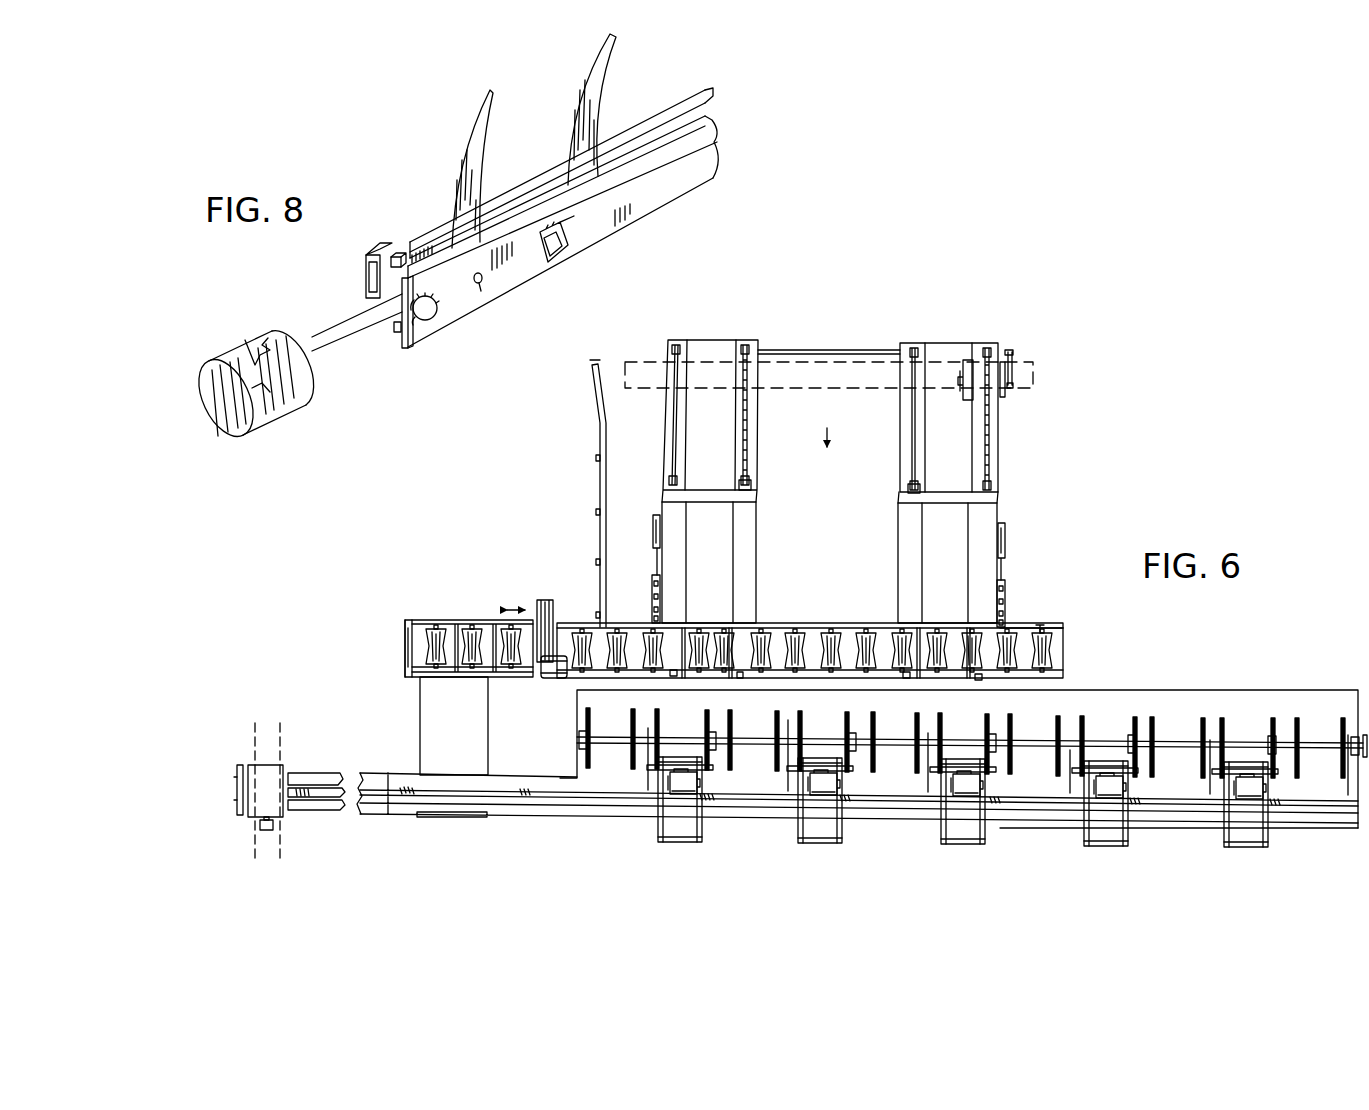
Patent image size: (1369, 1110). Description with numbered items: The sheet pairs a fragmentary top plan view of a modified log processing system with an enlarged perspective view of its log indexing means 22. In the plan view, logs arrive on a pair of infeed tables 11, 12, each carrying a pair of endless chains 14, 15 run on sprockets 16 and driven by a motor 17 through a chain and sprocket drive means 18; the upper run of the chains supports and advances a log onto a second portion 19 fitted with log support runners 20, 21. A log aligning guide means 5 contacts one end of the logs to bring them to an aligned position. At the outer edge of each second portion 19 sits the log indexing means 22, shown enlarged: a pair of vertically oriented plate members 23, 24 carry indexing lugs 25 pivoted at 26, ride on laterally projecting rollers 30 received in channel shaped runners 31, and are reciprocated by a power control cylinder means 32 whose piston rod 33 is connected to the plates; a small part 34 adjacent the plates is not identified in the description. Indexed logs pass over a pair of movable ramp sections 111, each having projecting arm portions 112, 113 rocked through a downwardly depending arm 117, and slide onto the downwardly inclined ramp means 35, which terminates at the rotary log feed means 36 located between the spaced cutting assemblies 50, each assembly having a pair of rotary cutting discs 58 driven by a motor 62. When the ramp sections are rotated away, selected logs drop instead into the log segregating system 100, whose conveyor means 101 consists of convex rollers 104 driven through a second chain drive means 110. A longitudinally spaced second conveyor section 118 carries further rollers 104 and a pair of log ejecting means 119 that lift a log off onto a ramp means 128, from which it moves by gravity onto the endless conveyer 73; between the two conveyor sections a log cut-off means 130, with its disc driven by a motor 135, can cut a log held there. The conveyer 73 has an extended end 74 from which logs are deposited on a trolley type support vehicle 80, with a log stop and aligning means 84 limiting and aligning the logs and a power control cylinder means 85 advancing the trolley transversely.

In FIG. 6, the log aligning guide means 5 is at (590, 388).
In FIG. 6, the infeed table 11 is at (703, 339).
In FIG. 6, the infeed table 12 is at (939, 343).
In FIG. 6, the endless chain 14 is at (678, 431).
In FIG. 6, the endless chain 15 is at (750, 432).
In FIG. 6, the sprockets 16 is at (752, 485).
In FIG. 6, the motor 17 is at (1004, 394).
In FIG. 6, the chain and sprocket drive means 18 is at (1014, 352).
In FIG. 6, the second portion 19 is at (896, 523).
In FIG. 6, the log support runner 20 is at (688, 529).
In FIG. 6, the log support runner 21 is at (757, 528).
In FIG. 6, the log indexing feed means 22 is at (652, 578).
In FIG. 8, the plate member 23 is at (390, 332).
In FIG. 8, the plate member 24 is at (421, 341).
In FIG. 8, the indexing lugs 25 is at (488, 142).
In FIG. 8, the pivot 26 is at (481, 292).
In FIG. 8, the rollers 30 is at (370, 284).
In FIG. 8, the channel shaped runners 31 is at (660, 203).
In FIG. 8, the power control cylinder means 32 is at (318, 373).
In FIG. 6, the power control cylinder means 32 is at (653, 523).
In FIG. 8, the piston rod 33 is at (332, 321).
In FIG. 8, the stop block 34 is at (397, 252).
In FIG. 6, the ramp means 35 is at (834, 704).
In FIG. 6, the rotary log feed means 36 is at (592, 712).
In FIG. 6, the cutting assemblies 50 is at (684, 845).
In FIG. 6, the rotary cutting discs 58 is at (646, 783).
In FIG. 6, the motor 62 is at (840, 788).
In FIG. 6, the endless conveyer 73 is at (541, 813).
In FIG. 6, the extended end 74 is at (313, 773).
In FIG. 6, the trolley type support vehicle 80 is at (284, 765).
In FIG. 6, the log stop and aligning means 84 is at (240, 764).
In FIG. 6, the power control cylinder means 85 is at (272, 829).
In FIG. 6, the log segregating system 100 is at (1066, 663).
In FIG. 6, the conveyor means 101 is at (850, 636).
In FIG. 6, the rollers 104 is at (436, 629).
In FIG. 6, the second chain drive means 110 is at (1026, 631).
In FIG. 6, the movable ramp sections 111 is at (725, 677).
In FIG. 6, the projecting arm portion 112 is at (685, 630).
In FIG. 6, the projecting arm portion 113 is at (733, 630).
In FIG. 6, the downwardly depending arm 117 is at (404, 678).
In FIG. 6, the second conveyor section 118 is at (412, 618).
In FIG. 6, the log ejecting means 119 is at (462, 626).
In FIG. 6, the ramp means 128 is at (440, 722).
In FIG. 6, the log cut-off means 130 is at (551, 585).
In FIG. 6, the motor 135 is at (560, 679).